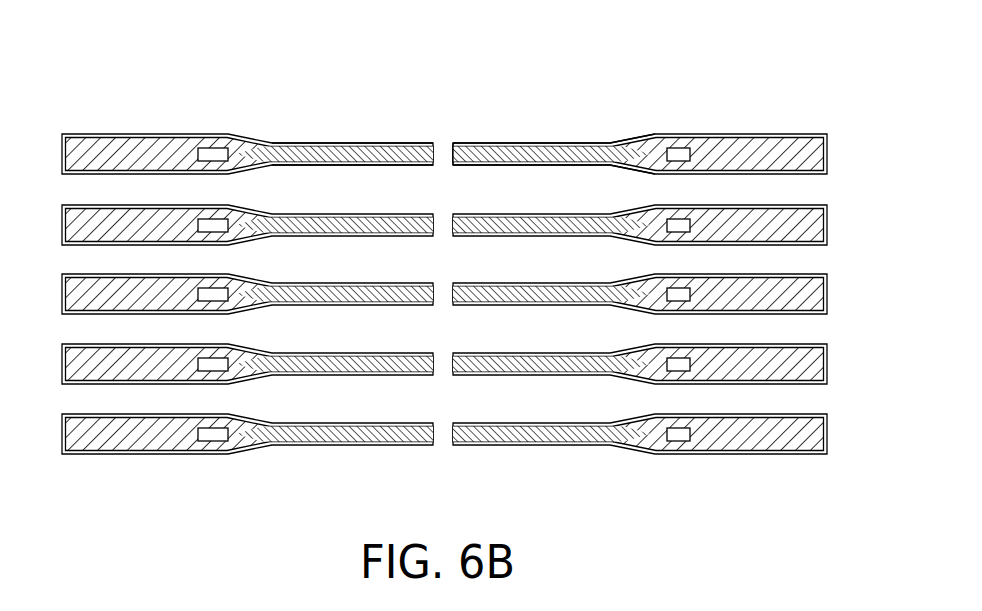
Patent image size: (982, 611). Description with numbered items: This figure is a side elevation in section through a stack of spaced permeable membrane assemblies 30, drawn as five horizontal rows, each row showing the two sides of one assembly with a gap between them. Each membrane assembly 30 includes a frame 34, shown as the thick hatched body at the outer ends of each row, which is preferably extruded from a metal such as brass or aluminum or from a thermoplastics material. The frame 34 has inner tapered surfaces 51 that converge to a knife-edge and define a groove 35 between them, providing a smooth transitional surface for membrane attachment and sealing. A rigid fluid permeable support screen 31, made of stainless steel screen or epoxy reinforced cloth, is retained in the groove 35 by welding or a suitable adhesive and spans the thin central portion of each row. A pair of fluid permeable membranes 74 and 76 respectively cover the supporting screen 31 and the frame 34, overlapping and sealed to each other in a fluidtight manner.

The membrane assembly 30 is at (481, 247).
The screen 31 is at (476, 143).
The frame 34 is at (753, 155).
The groove 35 is at (680, 148).
The inner tapered surfaces 51 is at (648, 145).
The fluid permeable membrane 74 is at (365, 138).
The fluid permeable membrane 76 is at (300, 167).